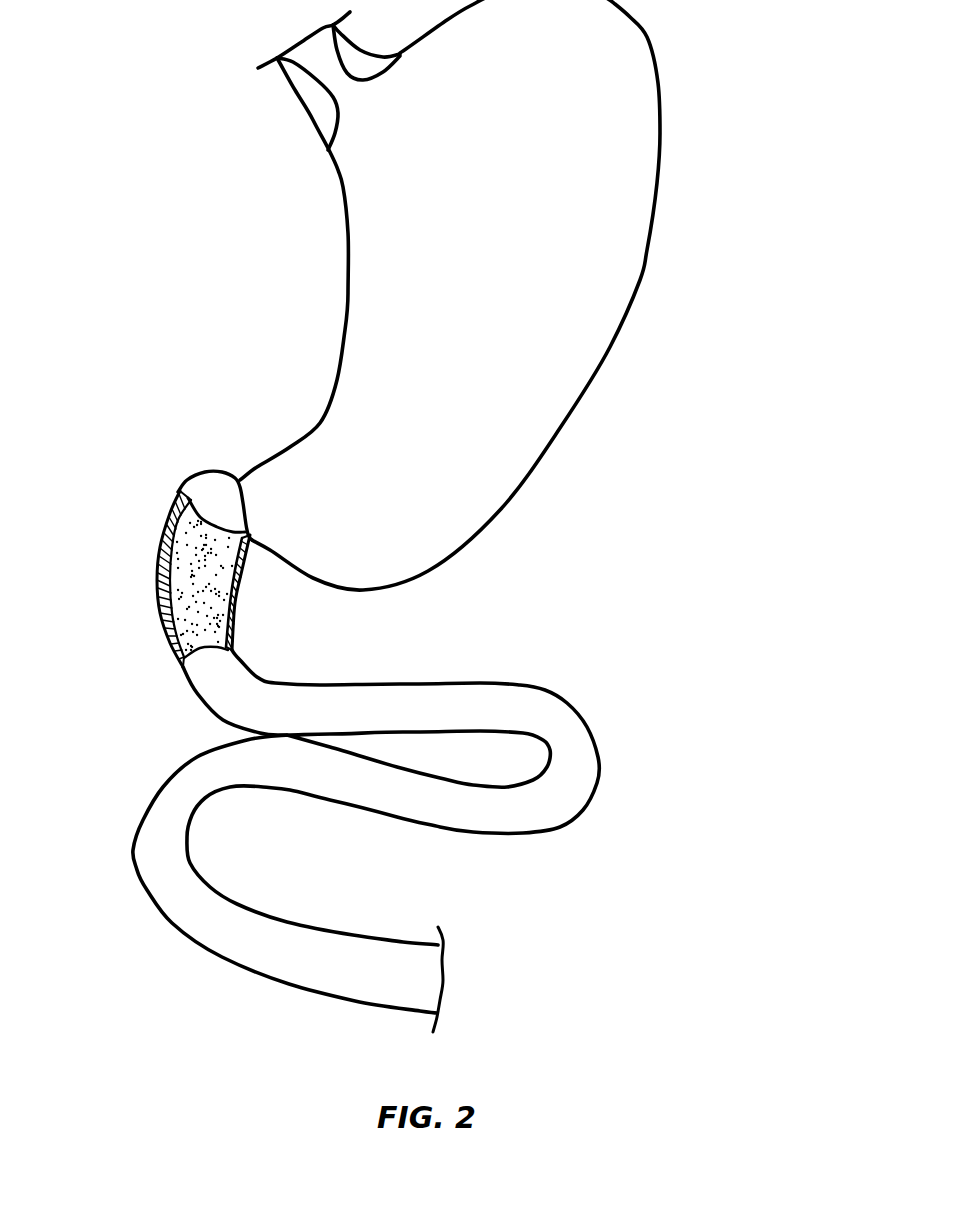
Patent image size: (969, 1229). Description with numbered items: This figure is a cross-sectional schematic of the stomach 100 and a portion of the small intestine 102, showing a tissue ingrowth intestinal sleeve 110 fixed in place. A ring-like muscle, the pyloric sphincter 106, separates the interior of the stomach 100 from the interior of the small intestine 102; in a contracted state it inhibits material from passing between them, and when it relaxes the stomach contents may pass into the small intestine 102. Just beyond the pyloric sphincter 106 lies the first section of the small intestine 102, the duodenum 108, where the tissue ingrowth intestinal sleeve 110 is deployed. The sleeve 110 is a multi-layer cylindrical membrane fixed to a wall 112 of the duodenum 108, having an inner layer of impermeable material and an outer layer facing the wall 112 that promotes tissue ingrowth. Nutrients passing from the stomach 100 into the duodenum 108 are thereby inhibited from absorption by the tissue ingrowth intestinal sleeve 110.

The stomach 100 is at (504, 235).
The small intestine 102 is at (538, 656).
The pyloric sphincter 106 is at (239, 477).
The duodenum 108 is at (216, 490).
The tissue ingrowth intestinal sleeve 110 is at (178, 495).
The wall of the duodenum 112 is at (238, 600).